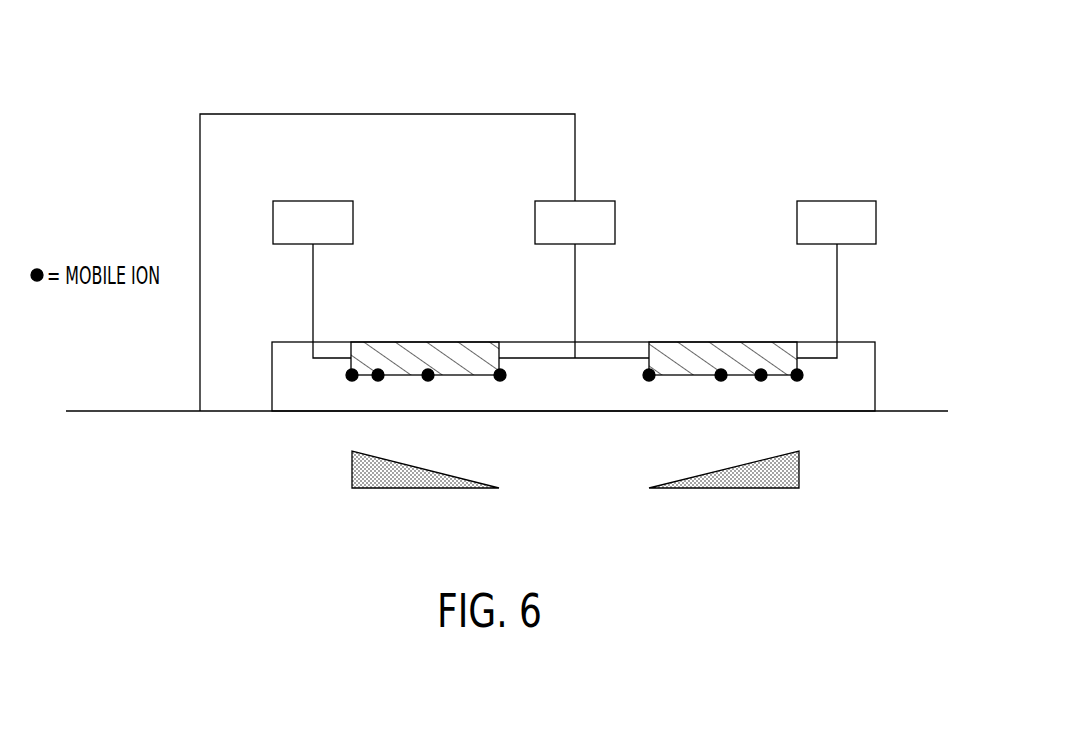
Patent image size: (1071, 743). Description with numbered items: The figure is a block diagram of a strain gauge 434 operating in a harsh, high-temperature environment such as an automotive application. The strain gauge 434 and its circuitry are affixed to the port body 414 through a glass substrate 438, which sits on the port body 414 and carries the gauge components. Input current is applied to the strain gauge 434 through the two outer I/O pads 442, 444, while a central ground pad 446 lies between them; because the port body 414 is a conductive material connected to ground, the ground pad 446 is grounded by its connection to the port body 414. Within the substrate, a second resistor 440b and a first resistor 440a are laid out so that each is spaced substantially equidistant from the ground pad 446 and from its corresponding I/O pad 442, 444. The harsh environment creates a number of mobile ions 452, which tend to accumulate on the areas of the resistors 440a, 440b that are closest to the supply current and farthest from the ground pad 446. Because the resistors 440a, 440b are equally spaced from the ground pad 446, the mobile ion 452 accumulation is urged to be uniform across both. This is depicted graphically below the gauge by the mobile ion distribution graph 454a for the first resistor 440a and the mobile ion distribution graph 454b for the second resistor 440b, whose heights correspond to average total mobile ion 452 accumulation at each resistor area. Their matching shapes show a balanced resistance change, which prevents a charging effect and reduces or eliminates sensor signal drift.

The strain gauge 434 is at (752, 88).
The port body 414 is at (170, 413).
The glass substrate 438 is at (872, 378).
The I/O pad 442 is at (311, 200).
The ground pad 446 is at (592, 200).
The I/O pad 444 is at (836, 200).
The second resistor 440b is at (418, 348).
The first resistor 440a is at (758, 348).
The mobile ion 452 is at (429, 381).
The mobile ion distribution graph 454b is at (430, 490).
The mobile ion distribution graph 454a is at (733, 490).